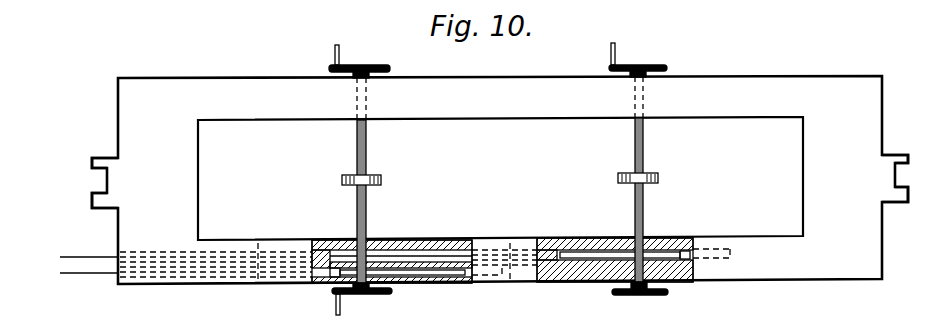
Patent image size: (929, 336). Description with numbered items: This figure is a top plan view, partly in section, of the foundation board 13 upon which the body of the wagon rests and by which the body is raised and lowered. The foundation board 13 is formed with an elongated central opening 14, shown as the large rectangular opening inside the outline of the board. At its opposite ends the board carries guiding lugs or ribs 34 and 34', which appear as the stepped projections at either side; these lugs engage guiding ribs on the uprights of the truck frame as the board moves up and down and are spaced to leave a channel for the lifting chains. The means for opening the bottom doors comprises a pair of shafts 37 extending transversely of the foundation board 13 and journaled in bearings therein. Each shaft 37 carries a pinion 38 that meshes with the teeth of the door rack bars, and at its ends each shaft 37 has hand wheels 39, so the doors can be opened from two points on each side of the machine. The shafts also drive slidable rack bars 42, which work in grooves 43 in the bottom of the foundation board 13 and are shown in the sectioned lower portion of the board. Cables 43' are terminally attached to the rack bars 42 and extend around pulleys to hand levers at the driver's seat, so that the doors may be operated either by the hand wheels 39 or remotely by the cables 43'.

The foundation board 13 is at (757, 86).
The elongated central opening 14 is at (778, 131).
The guiding lug 34 is at (495, 148).
The guiding lug 34' is at (489, 212).
The shaft 37 is at (357, 150).
The pinion 38 is at (382, 178).
The hand wheel 39 is at (362, 65).
The slidable rack bar 42 is at (432, 272).
The groove 43 is at (499, 265).
The cable 43' is at (395, 263).